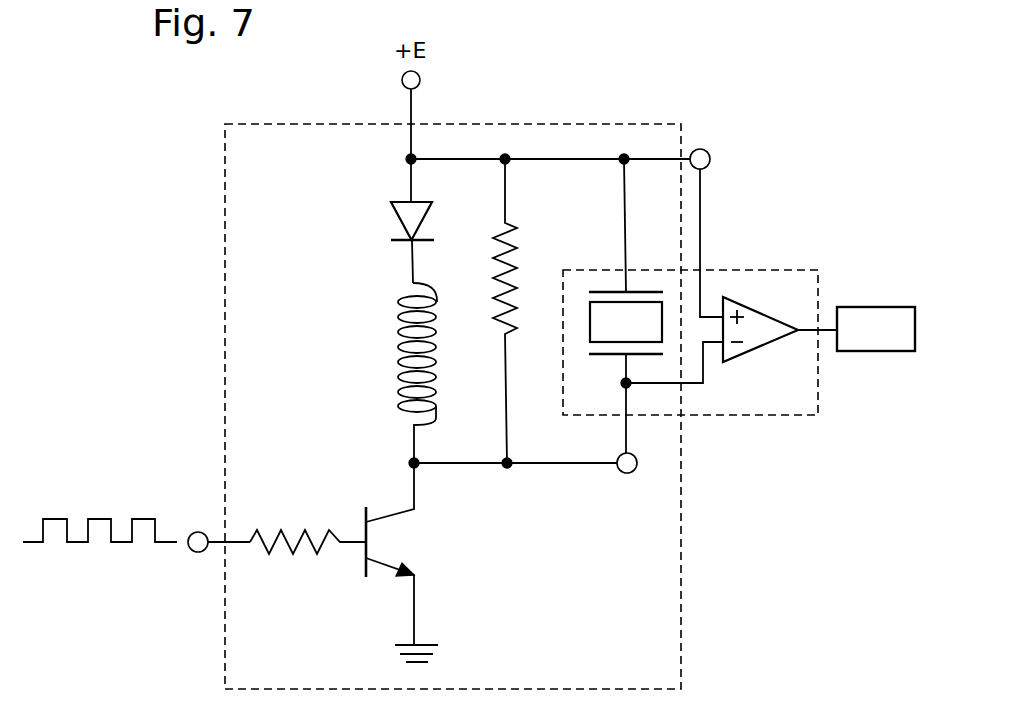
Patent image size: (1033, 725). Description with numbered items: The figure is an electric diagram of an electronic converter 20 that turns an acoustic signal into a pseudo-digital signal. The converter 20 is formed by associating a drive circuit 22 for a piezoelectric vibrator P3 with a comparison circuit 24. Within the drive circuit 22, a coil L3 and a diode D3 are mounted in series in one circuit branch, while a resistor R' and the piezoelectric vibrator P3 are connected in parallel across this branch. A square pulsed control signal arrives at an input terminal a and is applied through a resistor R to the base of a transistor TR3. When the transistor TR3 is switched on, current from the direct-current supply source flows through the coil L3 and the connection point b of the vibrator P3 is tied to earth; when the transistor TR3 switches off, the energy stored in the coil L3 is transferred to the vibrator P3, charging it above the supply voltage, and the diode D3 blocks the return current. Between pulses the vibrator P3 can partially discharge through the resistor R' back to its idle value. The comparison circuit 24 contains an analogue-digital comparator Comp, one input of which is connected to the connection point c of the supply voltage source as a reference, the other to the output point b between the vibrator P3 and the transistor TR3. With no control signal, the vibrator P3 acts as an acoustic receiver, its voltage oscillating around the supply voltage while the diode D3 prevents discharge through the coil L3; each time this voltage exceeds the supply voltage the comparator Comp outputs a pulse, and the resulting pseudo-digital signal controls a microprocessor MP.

The electronic converter 20 is at (743, 462).
The drive circuit 22 is at (223, 230).
The comparison circuit 24 is at (748, 268).
The diode D3 is at (409, 217).
The coil L3 is at (402, 345).
The resistor R' is at (536, 311).
The piezoelectric vibrator P3 is at (636, 292).
The resistor R is at (308, 512).
The transistor TR3 is at (360, 568).
The analogue-digital comparator Comp is at (750, 336).
The microprocessor MP is at (876, 329).
The input terminal a is at (198, 532).
The connection point b is at (627, 473).
The connection point c is at (702, 149).